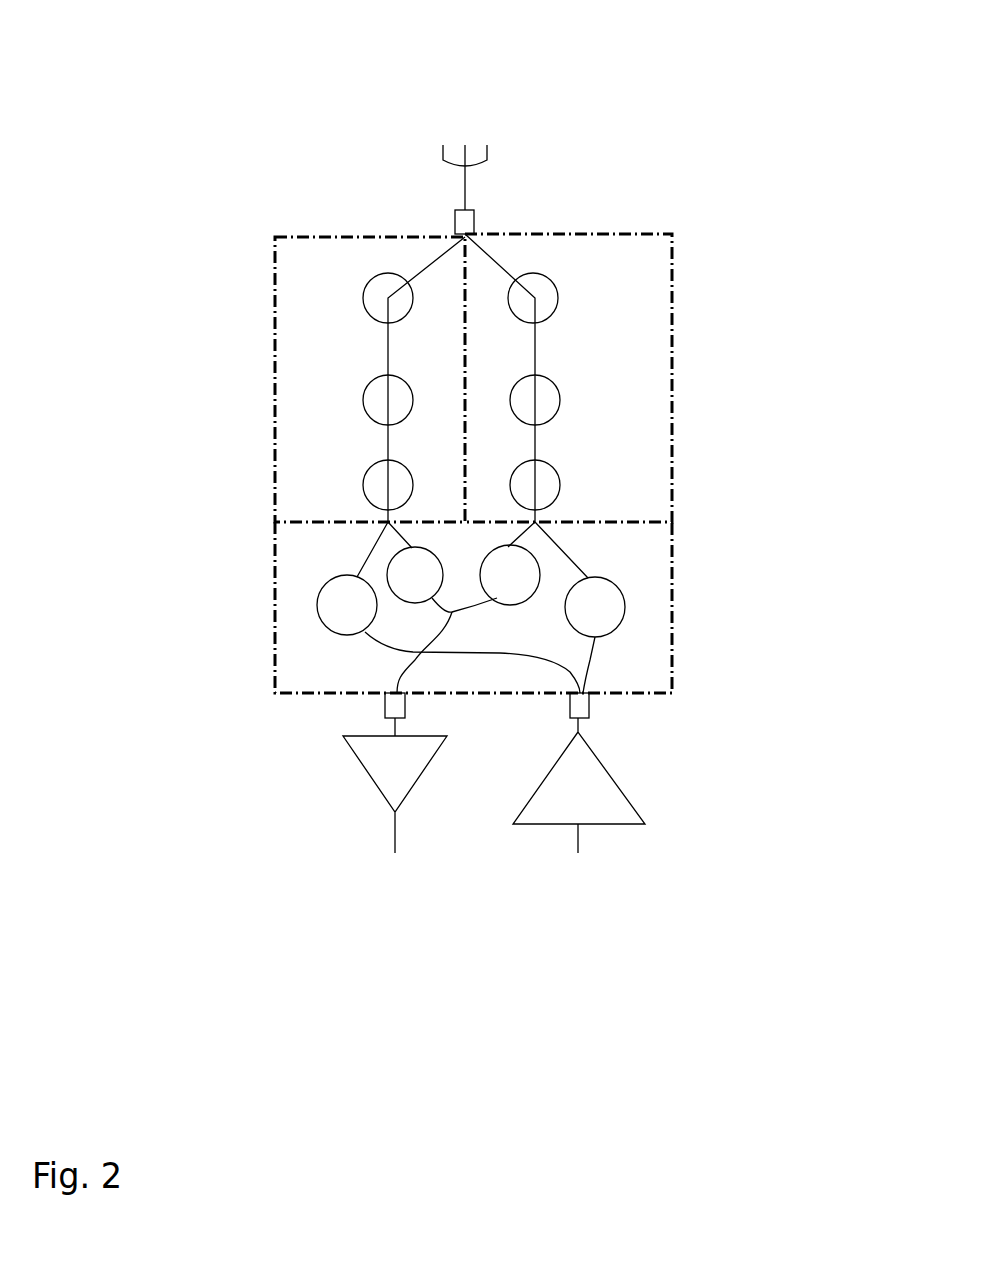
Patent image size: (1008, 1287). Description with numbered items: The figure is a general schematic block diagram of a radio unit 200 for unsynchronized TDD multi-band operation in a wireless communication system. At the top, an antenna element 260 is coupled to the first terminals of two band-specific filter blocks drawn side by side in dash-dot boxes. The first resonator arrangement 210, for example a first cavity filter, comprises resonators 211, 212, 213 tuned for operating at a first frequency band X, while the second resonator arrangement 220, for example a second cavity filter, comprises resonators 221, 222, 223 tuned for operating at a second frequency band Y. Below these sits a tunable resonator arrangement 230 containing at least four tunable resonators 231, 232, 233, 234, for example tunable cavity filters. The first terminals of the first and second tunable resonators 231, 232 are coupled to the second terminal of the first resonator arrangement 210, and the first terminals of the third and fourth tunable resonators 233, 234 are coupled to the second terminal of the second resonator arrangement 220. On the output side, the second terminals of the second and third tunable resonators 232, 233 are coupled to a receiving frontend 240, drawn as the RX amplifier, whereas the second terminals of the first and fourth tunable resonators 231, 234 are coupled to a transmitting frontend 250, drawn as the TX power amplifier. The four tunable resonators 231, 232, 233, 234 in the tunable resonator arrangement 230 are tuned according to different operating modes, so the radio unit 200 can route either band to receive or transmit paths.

The radio unit 200 is at (225, 112).
The first resonator arrangement 210 is at (297, 356).
The resonator 211 is at (357, 301).
The resonator 212 is at (356, 400).
The resonator 213 is at (355, 485).
The second resonator arrangement 220 is at (632, 374).
The resonator 221 is at (563, 301).
The resonator 222 is at (568, 400).
The resonator 223 is at (568, 485).
The tunable resonator arrangement 230 is at (322, 673).
The first tunable resonator 231 is at (342, 585).
The second tunable resonator 232 is at (395, 575).
The third tunable resonator 233 is at (517, 558).
The fourth tunable resonator 234 is at (618, 602).
The receiving frontend 240 is at (390, 790).
The transmitting frontend 250 is at (600, 790).
The antenna element 260 is at (483, 152).